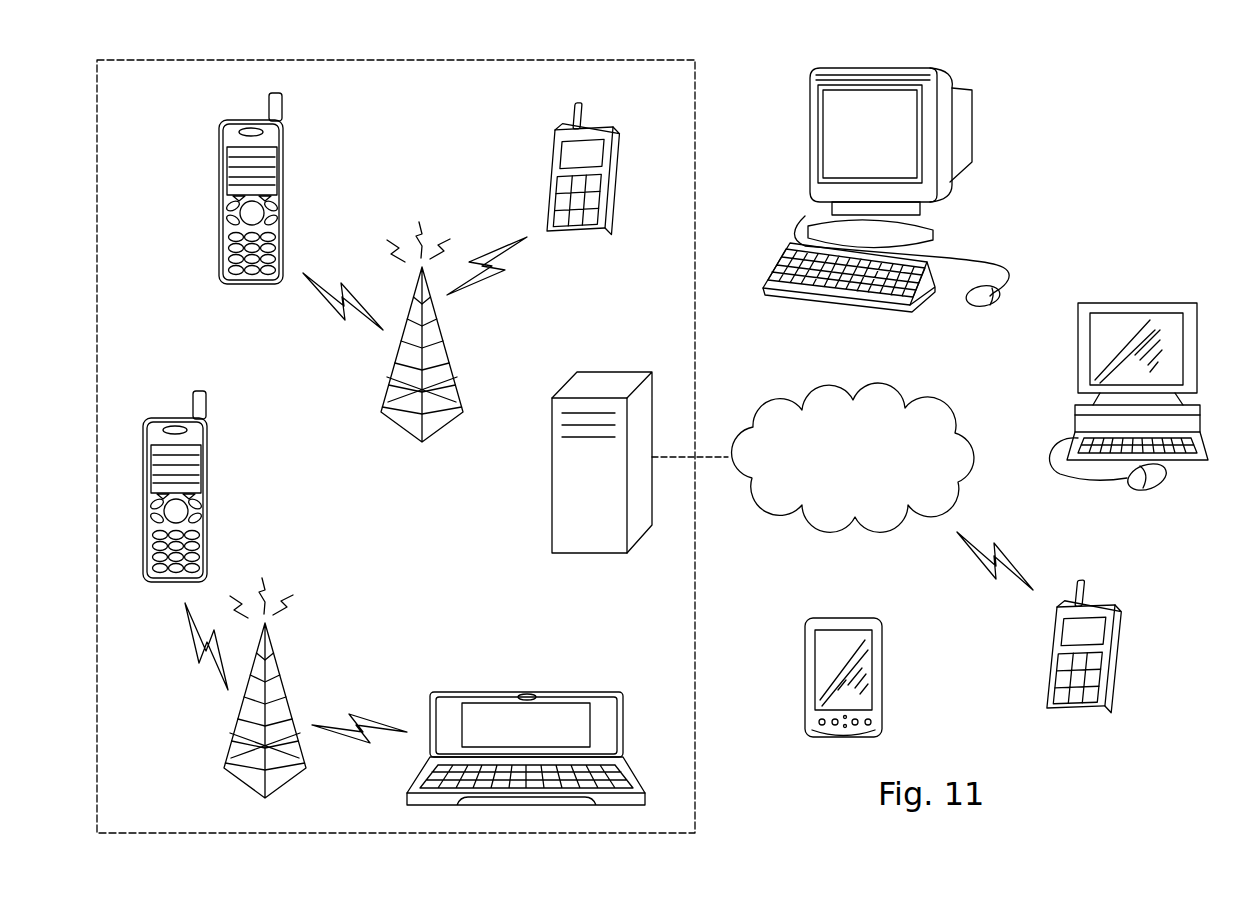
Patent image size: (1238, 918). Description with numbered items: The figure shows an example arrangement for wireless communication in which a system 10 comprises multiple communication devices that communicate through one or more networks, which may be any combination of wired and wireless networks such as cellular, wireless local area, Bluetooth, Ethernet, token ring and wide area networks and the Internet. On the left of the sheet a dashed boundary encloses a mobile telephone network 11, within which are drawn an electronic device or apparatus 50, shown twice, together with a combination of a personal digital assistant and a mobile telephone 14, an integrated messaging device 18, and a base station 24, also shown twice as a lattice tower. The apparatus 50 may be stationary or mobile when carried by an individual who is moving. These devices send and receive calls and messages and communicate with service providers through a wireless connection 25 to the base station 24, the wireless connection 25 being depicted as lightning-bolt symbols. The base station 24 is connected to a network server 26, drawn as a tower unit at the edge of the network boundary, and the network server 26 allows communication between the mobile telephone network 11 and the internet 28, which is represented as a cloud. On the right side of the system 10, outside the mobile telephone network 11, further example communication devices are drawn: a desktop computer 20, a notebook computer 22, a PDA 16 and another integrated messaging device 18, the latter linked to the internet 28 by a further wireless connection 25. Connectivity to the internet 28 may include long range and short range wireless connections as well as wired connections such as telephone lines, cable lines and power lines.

The system 10 is at (1184, 562).
The mobile telephone network 11 is at (144, 102).
The combination of a personal digital assistant and a mobile telephone 14 is at (508, 692).
The PDA 16 is at (885, 668).
The integrated messaging device 18 is at (546, 186).
The desktop computer 20 is at (975, 132).
The notebook computer 22 is at (1137, 303).
The base station 24 is at (445, 337).
The wireless connection 25 is at (203, 665).
The network server 26 is at (550, 470).
The internet 28 is at (771, 405).
The electronic device or apparatus 50 is at (285, 197).